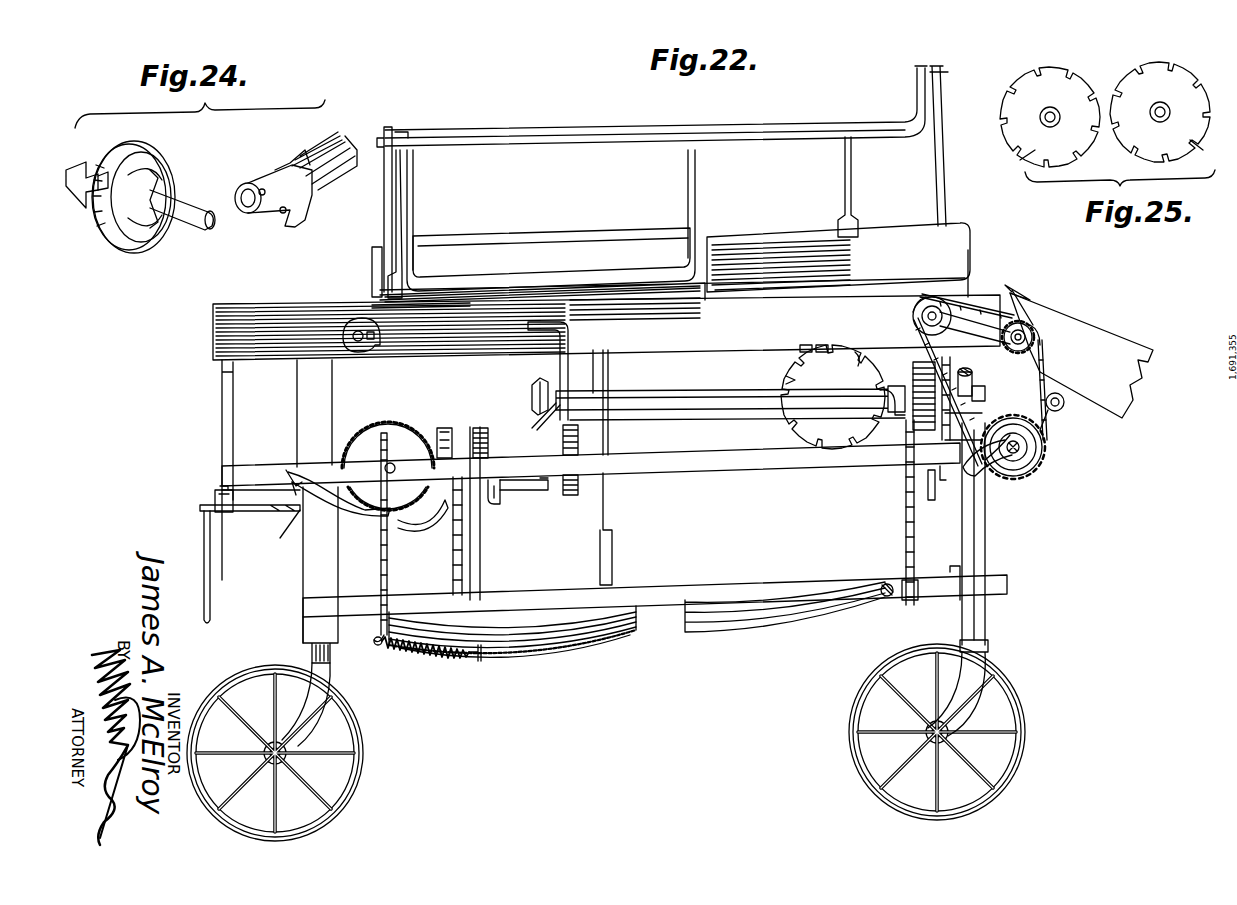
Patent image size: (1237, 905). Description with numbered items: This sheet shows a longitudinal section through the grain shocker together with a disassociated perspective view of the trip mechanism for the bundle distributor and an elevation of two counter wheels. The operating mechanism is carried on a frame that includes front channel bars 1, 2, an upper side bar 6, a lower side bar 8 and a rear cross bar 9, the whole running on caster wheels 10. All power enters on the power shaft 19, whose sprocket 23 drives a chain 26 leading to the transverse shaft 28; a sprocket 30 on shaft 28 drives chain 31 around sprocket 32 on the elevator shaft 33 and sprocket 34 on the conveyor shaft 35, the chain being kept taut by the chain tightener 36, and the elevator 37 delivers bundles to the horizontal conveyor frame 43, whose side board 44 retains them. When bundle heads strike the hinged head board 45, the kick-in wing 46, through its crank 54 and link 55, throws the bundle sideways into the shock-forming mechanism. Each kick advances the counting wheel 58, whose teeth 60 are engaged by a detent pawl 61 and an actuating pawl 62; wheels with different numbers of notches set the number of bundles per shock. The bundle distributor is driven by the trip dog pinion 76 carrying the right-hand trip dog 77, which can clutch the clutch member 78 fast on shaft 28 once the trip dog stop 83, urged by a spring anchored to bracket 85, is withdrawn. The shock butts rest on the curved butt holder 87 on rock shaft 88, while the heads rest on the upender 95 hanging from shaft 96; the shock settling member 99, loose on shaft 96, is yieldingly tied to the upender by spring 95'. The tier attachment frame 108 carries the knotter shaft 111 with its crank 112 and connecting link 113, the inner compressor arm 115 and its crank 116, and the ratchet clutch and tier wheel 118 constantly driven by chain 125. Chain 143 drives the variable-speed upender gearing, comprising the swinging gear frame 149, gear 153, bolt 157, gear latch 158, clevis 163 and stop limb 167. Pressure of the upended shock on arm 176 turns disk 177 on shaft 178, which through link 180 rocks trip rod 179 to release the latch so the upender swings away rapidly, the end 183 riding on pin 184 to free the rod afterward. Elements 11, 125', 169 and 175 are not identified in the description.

In FIG. 22, the front channel bar 1 is at (955, 588).
In FIG. 22, the front channel bar 2 is at (958, 468).
In FIG. 22, the upper side bar 6 is at (782, 468).
In FIG. 22, the lower side bar 8 is at (370, 610).
In FIG. 22, the cross bar 9 is at (222, 372).
In FIG. 22, the caster wheel 10 is at (355, 705).
In FIG. 22, the leaf spring plate 11 is at (590, 640).
In FIG. 22, the power shaft 19 is at (1007, 582).
In FIG. 22, the sprocket 23 is at (905, 605).
In FIG. 22, the chain 26 is at (915, 538).
In FIG. 24, the transverse shaft 28 is at (80, 185).
In FIG. 22, the transverse shaft 28 is at (1040, 470).
In FIG. 22, the sprocket 30 is at (1044, 450).
In FIG. 22, the chain 31 is at (985, 305).
In FIG. 22, the sprocket 32 is at (1030, 340).
In FIG. 22, the elevator shaft 33 is at (1032, 336).
In FIG. 22, the sprocket 34 is at (915, 306).
In FIG. 22, the conveyor shaft 35 is at (921, 318).
In FIG. 22, the chain tightener 36 is at (1065, 406).
In FIG. 22, the elevator 37 is at (1112, 336).
In FIG. 22, the conveyor frame 43 is at (213, 350).
In FIG. 22, the side board 44 is at (975, 242).
In FIG. 22, the hinged head board 45 is at (372, 263).
In FIG. 22, the kick-in wing 46 is at (700, 230).
In FIG. 22, the crank 54 is at (920, 95).
In FIG. 22, the link 55 is at (943, 130).
In FIG. 25, the counting wheel 58 is at (1015, 134).
In FIG. 22, the counting wheel 58 is at (808, 430).
In FIG. 25, the teeth 60 is at (1035, 160).
In FIG. 22, the teeth 60 is at (858, 356).
In FIG. 22, the detent pawl 61 is at (800, 350).
In FIG. 22, the actuating pawl 62 is at (790, 380).
In FIG. 24, the trip dog pinion 76 is at (330, 150).
In FIG. 24, the trip dog 77 is at (296, 150).
In FIG. 22, the trip dog 77 is at (1045, 437).
In FIG. 24, the clutch member 78 is at (125, 158).
In FIG. 22, the clutch member 78 is at (1042, 460).
In FIG. 22, the trip dog stop 83 is at (1030, 475).
In FIG. 22, the bracket 85 is at (985, 476).
In FIG. 22, the shock butt holder 87 is at (760, 628).
In FIG. 22, the rock shaft 88 is at (875, 600).
In FIG. 22, the upender 95 is at (512, 607).
In FIG. 22, the spring 95' is at (456, 671).
In FIG. 22, the upender shaft 96 is at (386, 475).
In FIG. 22, the shock settling member 99 is at (382, 545).
In FIG. 22, the tier attachment frame 108 is at (640, 395).
In FIG. 22, the knotter shaft 111 is at (530, 408).
In FIG. 22, the crank 112 is at (985, 394).
In FIG. 22, the link 113 is at (963, 370).
In FIG. 22, the inner compressor arm 115 is at (548, 358).
In FIG. 22, the inner compressor arm crank 116 is at (905, 420).
In FIG. 22, the ratchet clutch and tier wheel 118 is at (914, 376).
In FIG. 22, the chain 125 is at (936, 488).
In FIG. 22, the link 125' is at (530, 426).
In FIG. 22, the chain 143 is at (464, 547).
In FIG. 22, the swinging variable gear frame 149 is at (540, 490).
In FIG. 22, the gear 153 is at (570, 495).
In FIG. 22, the bolt 157 is at (471, 431).
In FIG. 22, the gear latch 158 is at (500, 492).
In FIG. 22, the clevis 163 is at (448, 426).
In FIG. 22, the trip stop 167 is at (485, 495).
In FIG. 22, the gear wheel 169 is at (378, 430).
In FIG. 22, the arm 175 is at (408, 540).
In FIG. 22, the arm 176 is at (203, 556).
In FIG. 22, the disk 177 is at (200, 509).
In FIG. 22, the shaft 178 is at (215, 493).
In FIG. 22, the trip rod 179 is at (330, 500).
In FIG. 22, the link 180 is at (290, 500).
In FIG. 22, the end 183 is at (310, 497).
In FIG. 22, the pin 184 is at (281, 511).